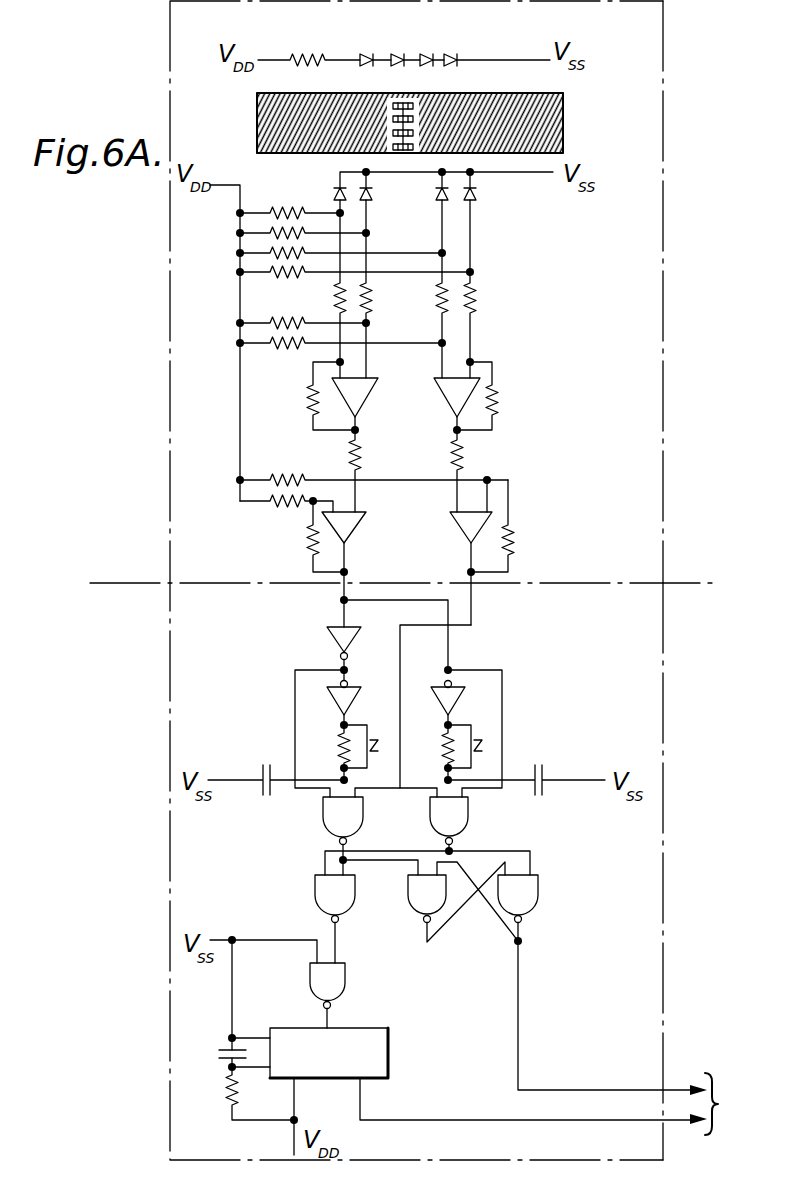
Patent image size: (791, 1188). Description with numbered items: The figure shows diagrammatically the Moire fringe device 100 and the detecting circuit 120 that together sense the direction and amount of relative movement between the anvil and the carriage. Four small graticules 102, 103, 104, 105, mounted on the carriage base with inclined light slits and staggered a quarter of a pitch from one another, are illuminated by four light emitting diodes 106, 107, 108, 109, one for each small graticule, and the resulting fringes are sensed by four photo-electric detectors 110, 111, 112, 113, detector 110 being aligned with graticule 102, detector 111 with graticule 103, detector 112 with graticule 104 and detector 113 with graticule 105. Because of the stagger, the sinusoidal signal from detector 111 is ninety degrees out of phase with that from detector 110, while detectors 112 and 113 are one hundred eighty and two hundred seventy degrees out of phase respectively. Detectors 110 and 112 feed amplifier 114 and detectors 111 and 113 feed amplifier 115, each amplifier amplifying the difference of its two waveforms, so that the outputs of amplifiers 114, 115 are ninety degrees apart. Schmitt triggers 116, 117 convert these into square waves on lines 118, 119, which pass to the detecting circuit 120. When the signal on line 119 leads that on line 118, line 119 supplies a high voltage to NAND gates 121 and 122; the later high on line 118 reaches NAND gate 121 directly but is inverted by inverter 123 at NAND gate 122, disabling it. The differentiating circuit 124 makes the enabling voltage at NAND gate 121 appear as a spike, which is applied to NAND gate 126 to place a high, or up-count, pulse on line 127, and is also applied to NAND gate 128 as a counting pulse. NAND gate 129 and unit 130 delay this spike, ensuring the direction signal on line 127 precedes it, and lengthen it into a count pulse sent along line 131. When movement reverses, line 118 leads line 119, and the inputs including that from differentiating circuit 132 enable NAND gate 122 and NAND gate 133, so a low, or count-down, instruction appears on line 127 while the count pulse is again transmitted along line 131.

The Moire fringe device 100 is at (663, 394).
The small graticule 102 is at (413, 106).
The small graticule 103 is at (413, 119).
The small graticule 104 is at (394, 128).
The small graticule 105 is at (393, 147).
The light emitting diode 106 is at (362, 54).
The light emitting diode 107 is at (396, 54).
The light emitting diode 108 is at (426, 54).
The light emitting diode 109 is at (450, 54).
The photo-electric detector 110 is at (333, 194).
The photo-electric detector 111 is at (438, 203).
The photo-electric detector 112 is at (373, 196).
The photo-electric detector 113 is at (478, 196).
The amplifier 114 is at (316, 382).
The amplifier 115 is at (468, 388).
The Schmitt trigger 116 is at (334, 521).
The Schmitt trigger 117 is at (483, 522).
The line 118 is at (334, 592).
The line 119 is at (473, 609).
The detecting circuit 120 is at (665, 701).
The NAND gate 121 is at (473, 823).
The NAND gate 122 is at (328, 820).
The inverter 123 is at (331, 637).
The differentiating circuit 124 is at (464, 736).
The NAND gate 126 is at (524, 892).
The line 127 is at (521, 1037).
The NAND gate 128 is at (323, 890).
The NAND gate 129 is at (338, 985).
The unit 130 is at (376, 1051).
The line 131 is at (473, 1096).
The differentiating circuit 132 is at (338, 736).
The NAND gate 133 is at (420, 900).